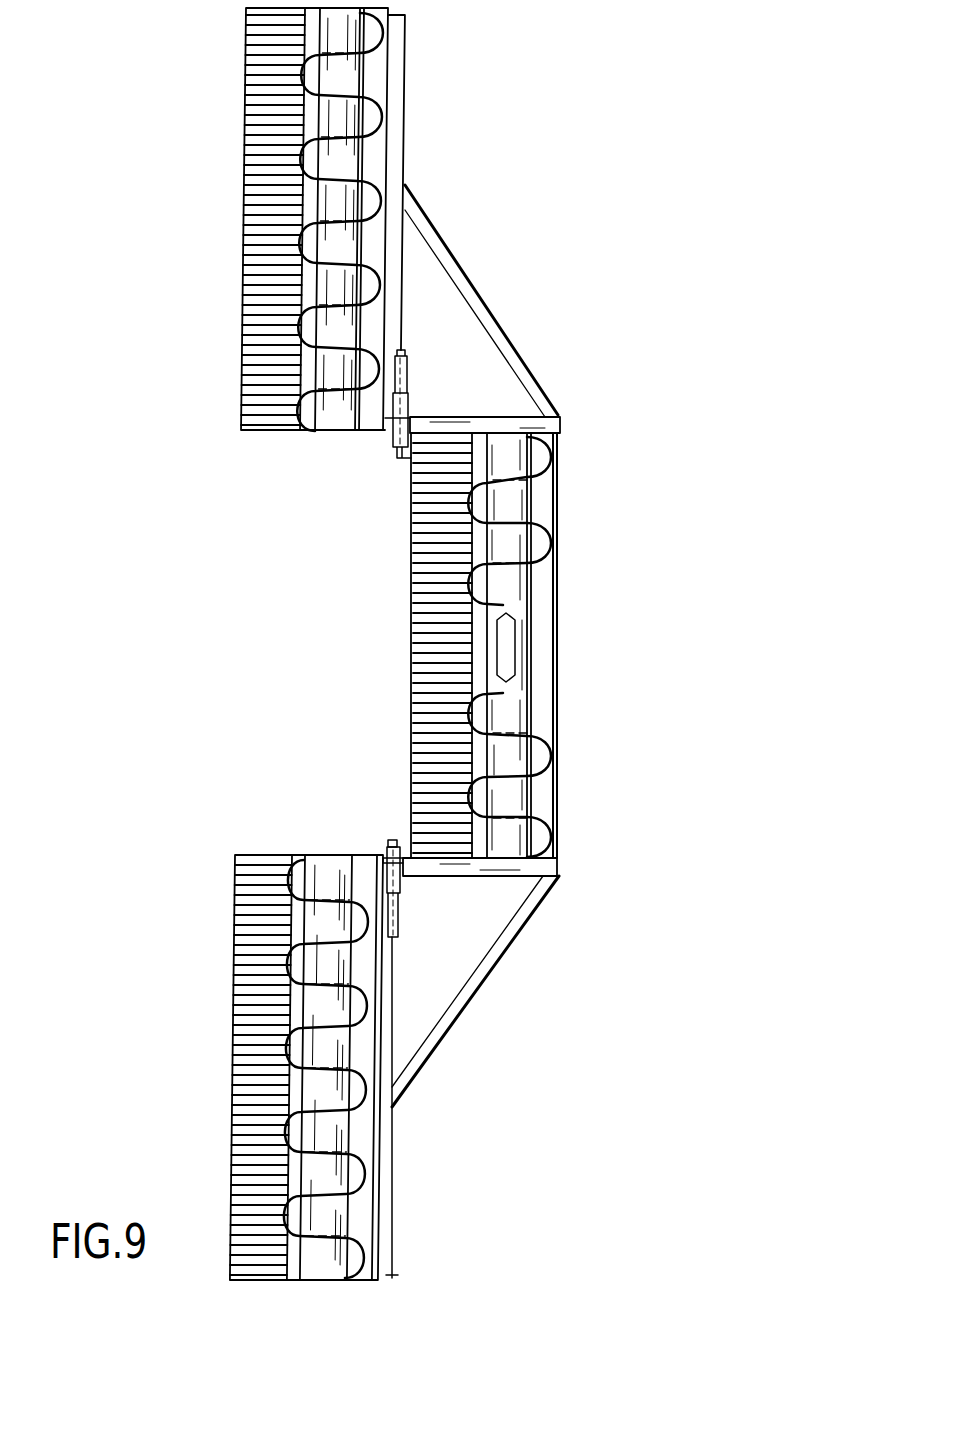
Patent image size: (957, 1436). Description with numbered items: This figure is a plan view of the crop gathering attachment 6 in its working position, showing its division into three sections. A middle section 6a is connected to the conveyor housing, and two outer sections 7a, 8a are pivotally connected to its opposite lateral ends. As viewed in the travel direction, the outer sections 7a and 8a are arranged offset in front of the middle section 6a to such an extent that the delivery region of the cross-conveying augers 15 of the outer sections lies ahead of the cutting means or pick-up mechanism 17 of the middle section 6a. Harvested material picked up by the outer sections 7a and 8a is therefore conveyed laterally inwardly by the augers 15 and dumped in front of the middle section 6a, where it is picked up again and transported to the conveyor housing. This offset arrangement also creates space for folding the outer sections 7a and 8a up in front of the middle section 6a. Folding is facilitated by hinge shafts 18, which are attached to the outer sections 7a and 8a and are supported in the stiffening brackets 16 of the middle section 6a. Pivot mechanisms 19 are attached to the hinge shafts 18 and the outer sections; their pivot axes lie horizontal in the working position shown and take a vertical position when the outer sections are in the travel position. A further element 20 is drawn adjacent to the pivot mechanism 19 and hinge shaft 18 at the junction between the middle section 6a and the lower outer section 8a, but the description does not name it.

The attachment 6 is at (352, 644).
The middle section 6a is at (465, 646).
The outer section 7a is at (294, 643).
The outer section 8a is at (220, 1033).
The cross-conveying auger 15 is at (347, 157).
The stiffening bracket 16 is at (545, 872).
The pick-up mechanism 17 is at (440, 696).
The hinge shaft 18 is at (403, 869).
The pivot mechanism 19 is at (383, 842).
The hydraulic cylinder 20 is at (400, 928).